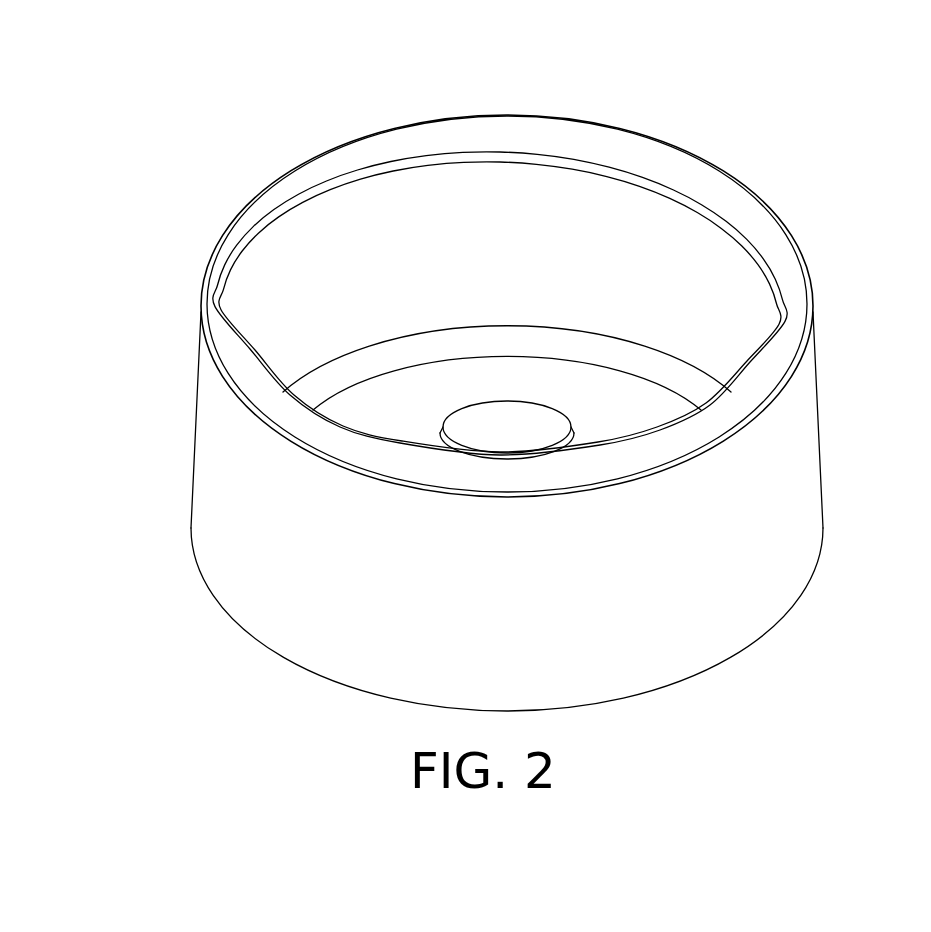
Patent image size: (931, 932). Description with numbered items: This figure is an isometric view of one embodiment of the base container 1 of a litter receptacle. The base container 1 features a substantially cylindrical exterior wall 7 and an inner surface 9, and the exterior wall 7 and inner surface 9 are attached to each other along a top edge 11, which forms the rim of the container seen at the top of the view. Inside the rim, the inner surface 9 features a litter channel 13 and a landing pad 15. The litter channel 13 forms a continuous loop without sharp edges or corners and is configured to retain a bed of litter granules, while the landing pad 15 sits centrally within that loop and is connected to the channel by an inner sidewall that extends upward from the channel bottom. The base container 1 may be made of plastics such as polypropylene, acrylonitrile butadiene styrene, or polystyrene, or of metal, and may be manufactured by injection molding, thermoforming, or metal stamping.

The base container 1 is at (160, 457).
The exterior wall 7 is at (197, 390).
The inner surface 9 is at (452, 162).
The top edge 11 is at (747, 186).
The litter channel 13 is at (383, 405).
The landing pad 15 is at (517, 437).